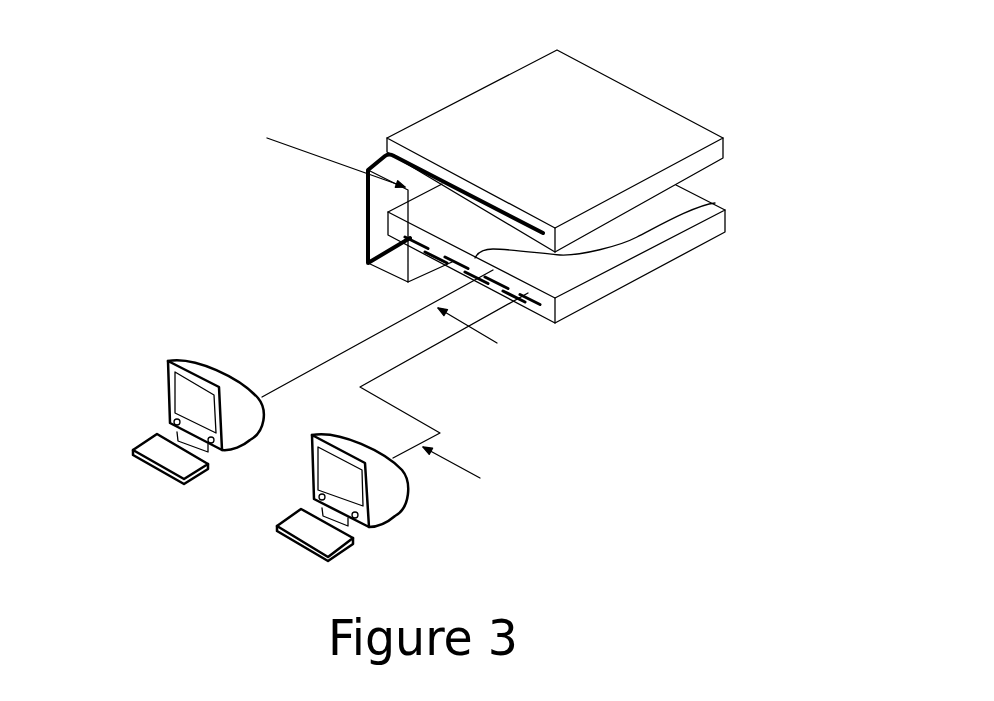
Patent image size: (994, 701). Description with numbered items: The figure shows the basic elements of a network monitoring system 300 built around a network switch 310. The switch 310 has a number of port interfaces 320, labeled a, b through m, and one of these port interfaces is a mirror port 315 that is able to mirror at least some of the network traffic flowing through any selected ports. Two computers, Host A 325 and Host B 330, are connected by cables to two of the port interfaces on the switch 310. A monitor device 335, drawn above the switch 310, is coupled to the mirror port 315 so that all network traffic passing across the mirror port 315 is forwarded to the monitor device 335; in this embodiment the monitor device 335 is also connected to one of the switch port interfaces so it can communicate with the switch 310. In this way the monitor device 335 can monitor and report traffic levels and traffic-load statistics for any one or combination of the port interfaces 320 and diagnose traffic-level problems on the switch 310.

The network monitoring system 300 is at (442, 299).
The network switch 310 is at (652, 275).
The mirror port 315 is at (364, 250).
The port interfaces 320 is at (715, 203).
The Host A 325 is at (282, 377).
The Host B 330 is at (364, 435).
The monitor device 335 is at (557, 92).